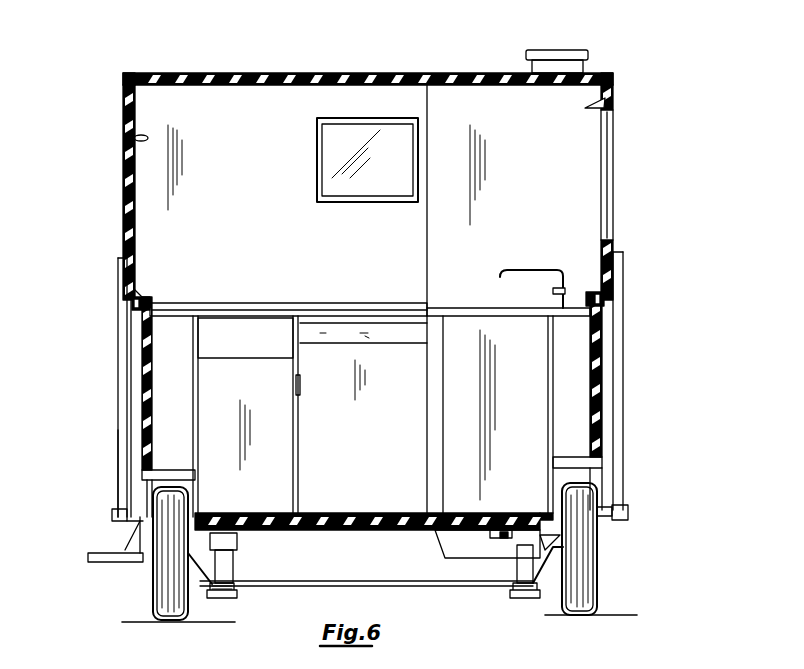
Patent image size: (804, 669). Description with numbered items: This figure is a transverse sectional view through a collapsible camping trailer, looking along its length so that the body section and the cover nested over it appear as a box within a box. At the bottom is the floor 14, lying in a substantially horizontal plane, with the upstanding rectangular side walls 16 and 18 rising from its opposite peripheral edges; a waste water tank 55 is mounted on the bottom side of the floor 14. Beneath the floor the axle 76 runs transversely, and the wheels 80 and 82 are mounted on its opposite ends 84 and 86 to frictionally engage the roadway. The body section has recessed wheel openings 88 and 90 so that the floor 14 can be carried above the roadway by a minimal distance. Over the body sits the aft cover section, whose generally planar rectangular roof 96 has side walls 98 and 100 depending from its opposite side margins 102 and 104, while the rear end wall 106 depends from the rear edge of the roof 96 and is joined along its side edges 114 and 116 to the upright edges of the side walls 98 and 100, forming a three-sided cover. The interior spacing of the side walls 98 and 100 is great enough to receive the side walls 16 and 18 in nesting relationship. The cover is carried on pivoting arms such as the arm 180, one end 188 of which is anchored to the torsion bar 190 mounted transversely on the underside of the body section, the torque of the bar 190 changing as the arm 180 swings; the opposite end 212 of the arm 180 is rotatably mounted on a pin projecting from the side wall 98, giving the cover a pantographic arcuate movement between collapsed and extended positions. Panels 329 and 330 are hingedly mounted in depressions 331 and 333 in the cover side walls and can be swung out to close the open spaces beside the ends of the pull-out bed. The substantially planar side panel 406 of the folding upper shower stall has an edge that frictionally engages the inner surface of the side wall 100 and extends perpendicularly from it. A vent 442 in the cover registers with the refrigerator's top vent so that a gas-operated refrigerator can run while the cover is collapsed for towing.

The floor 14 is at (358, 513).
The side wall 16 is at (146, 392).
The side wall 18 is at (598, 368).
The waste water tank 55 is at (478, 557).
The axle 76 is at (318, 582).
The wheel 80 is at (165, 590).
The wheel 82 is at (582, 552).
The axle end 84 is at (200, 565).
The axle end 86 is at (554, 565).
The recessed wheel opening 88 is at (168, 478).
The recessed wheel opening 90 is at (568, 478).
The roof 96 is at (396, 74).
The side wall 98 is at (128, 208).
The side wall 100 is at (609, 246).
The side margin 102 is at (125, 78).
The side margin 104 is at (618, 80).
The rear end wall 106 is at (240, 132).
The side edge 114 is at (136, 138).
The side edge 116 is at (612, 102).
The arm 180 is at (125, 343).
The arm end 188 is at (120, 458).
The torsion bar 190 is at (112, 512).
The arm end 212 is at (118, 267).
The panel 329 is at (140, 300).
The panel 330 is at (597, 290).
The depression 331 is at (138, 292).
The depression 333 is at (607, 284).
The side panel 406 is at (565, 162).
The vent 442 is at (566, 50).